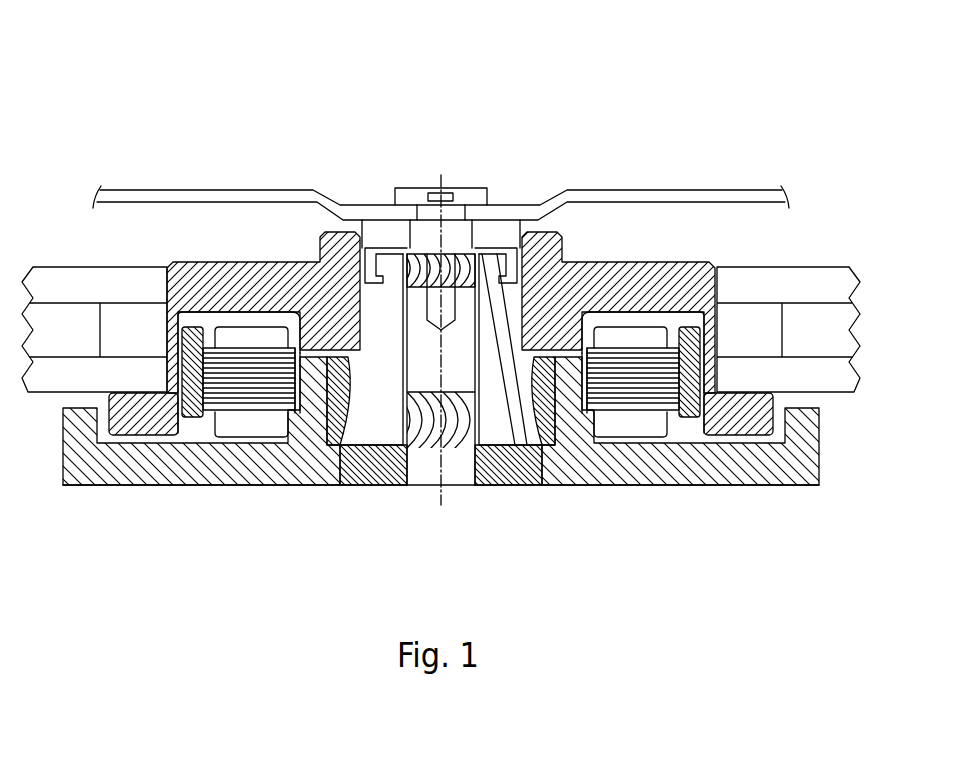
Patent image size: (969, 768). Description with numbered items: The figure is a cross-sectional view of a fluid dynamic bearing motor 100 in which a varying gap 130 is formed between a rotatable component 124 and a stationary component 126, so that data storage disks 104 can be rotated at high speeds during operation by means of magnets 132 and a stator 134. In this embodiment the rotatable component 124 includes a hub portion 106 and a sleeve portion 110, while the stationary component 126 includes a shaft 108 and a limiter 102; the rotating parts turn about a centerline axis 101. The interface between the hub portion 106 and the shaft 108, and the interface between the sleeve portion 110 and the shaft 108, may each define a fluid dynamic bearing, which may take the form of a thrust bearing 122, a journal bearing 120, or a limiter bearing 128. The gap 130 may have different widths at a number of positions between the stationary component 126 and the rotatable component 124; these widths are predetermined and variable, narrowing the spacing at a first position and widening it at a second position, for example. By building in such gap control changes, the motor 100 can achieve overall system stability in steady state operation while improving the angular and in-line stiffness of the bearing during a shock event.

The fluid dynamic bearing motor 100 is at (171, 113).
The centerline axis 101 is at (442, 215).
The limiter 102 is at (490, 237).
The data storage disks 104 is at (792, 267).
The hub portion 106 is at (543, 290).
The shaft 108 is at (460, 378).
The sleeve portion 110 is at (396, 393).
The journal bearing 120 is at (407, 342).
The thrust bearing 122 is at (502, 465).
The rotatable component 124 is at (365, 423).
The stationary component 126 is at (452, 480).
The limiter bearing 128 is at (398, 250).
The gap 130 is at (400, 308).
The magnets 132 is at (700, 397).
The stator 134 is at (677, 435).